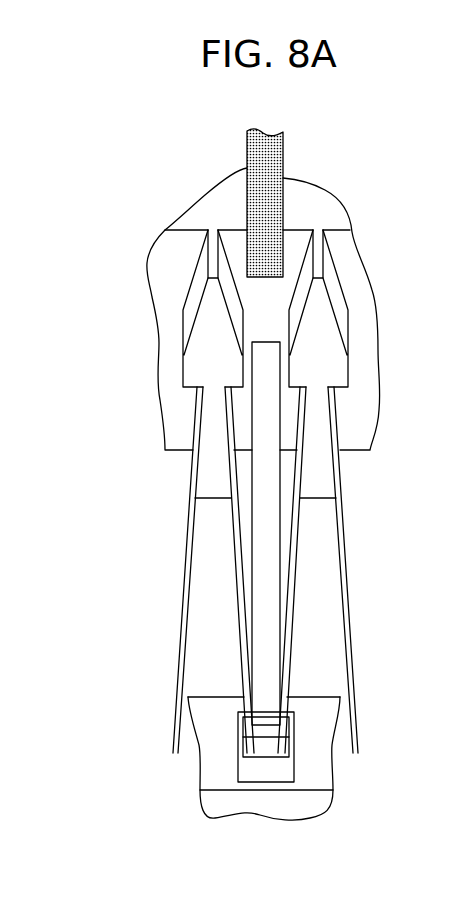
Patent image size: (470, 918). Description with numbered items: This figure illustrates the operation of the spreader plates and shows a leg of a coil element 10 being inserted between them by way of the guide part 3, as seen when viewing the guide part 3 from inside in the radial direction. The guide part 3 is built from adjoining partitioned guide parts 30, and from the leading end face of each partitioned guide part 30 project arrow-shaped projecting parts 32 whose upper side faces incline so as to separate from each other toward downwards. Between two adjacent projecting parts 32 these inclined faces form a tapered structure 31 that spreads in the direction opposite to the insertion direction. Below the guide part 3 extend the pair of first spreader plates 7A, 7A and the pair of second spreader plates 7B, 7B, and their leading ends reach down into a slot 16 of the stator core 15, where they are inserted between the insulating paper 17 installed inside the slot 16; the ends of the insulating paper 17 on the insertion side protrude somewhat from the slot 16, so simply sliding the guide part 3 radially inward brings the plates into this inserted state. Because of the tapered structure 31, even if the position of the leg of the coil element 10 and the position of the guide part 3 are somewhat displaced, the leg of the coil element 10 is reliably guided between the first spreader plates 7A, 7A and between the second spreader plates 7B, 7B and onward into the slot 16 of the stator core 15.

The guide part 3 is at (378, 207).
The coil element 10 is at (270, 155).
The partitioned guide part 30 is at (172, 252).
The tapered structure 31 is at (233, 222).
The projecting part 32 is at (205, 365).
The first spreader plate 7A is at (207, 592).
The second spreader plate 7B is at (270, 527).
The stator core 15 is at (217, 770).
The slot 16 is at (265, 745).
The insulating paper 17 is at (287, 770).